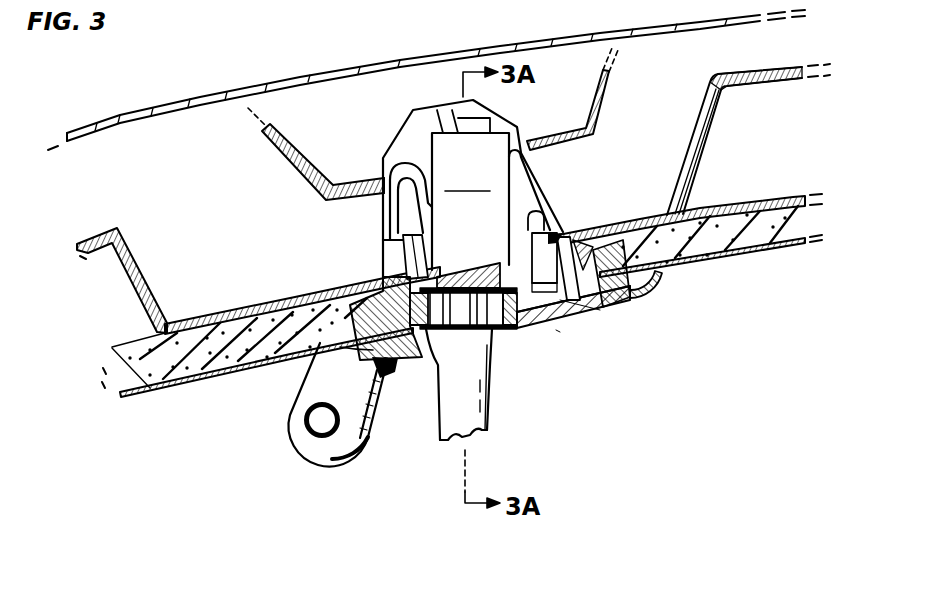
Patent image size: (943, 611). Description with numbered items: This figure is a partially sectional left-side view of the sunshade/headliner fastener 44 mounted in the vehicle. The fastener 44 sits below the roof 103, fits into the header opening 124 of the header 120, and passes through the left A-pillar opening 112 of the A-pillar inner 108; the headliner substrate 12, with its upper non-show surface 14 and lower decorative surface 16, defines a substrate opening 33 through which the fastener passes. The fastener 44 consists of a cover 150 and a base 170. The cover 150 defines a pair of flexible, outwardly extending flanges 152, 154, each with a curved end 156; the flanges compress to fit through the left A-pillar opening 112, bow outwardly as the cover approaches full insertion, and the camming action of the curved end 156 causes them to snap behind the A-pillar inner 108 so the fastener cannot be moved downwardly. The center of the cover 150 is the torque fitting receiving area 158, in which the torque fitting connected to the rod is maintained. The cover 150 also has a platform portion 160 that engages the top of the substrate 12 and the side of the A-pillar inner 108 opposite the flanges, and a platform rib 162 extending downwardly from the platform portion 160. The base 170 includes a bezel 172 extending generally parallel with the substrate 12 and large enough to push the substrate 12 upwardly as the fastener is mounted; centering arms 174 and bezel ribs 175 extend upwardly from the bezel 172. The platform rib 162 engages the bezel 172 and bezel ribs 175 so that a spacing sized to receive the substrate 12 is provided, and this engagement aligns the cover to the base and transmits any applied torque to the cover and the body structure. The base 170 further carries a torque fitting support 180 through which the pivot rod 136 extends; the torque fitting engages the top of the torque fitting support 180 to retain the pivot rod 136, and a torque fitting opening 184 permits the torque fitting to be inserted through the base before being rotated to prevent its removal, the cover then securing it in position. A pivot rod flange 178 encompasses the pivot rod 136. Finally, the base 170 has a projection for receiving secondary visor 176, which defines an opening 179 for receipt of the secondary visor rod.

The roof 103 is at (258, 80).
The header 120 is at (305, 185).
The header opening 124 is at (376, 183).
The flange 154 is at (533, 168).
The platform portion 160 is at (735, 139).
The A-pillar inner 108 is at (258, 312).
The substrate opening 33 is at (357, 283).
The substrate 12 is at (686, 220).
The non-show surface 14 is at (744, 200).
The decorative surface 16 is at (773, 252).
The base 170 is at (646, 284).
The bezel 172 is at (643, 284).
The platform rib 162 is at (578, 314).
The bezel ribs 175 is at (604, 320).
The cover 150 is at (468, 247).
The torque fitting receiving area 158 is at (467, 181).
The flange 152 is at (385, 213).
The centering arms 174 is at (416, 268).
The left A-pillar opening 112 is at (513, 240).
The curved end 156 is at (390, 279).
The torque fitting opening 184 is at (420, 352).
The torque fitting support 180 is at (479, 324).
The pivot rod flange 178 is at (490, 329).
The pivot rod 136 is at (488, 410).
The projection for receiving secondary visor 176 is at (332, 405).
The opening 179 is at (300, 433).
The fastener 44 is at (556, 362).